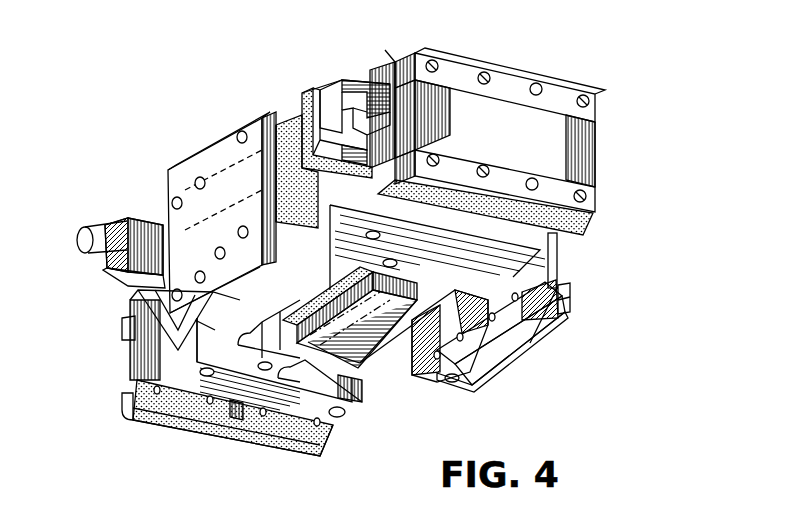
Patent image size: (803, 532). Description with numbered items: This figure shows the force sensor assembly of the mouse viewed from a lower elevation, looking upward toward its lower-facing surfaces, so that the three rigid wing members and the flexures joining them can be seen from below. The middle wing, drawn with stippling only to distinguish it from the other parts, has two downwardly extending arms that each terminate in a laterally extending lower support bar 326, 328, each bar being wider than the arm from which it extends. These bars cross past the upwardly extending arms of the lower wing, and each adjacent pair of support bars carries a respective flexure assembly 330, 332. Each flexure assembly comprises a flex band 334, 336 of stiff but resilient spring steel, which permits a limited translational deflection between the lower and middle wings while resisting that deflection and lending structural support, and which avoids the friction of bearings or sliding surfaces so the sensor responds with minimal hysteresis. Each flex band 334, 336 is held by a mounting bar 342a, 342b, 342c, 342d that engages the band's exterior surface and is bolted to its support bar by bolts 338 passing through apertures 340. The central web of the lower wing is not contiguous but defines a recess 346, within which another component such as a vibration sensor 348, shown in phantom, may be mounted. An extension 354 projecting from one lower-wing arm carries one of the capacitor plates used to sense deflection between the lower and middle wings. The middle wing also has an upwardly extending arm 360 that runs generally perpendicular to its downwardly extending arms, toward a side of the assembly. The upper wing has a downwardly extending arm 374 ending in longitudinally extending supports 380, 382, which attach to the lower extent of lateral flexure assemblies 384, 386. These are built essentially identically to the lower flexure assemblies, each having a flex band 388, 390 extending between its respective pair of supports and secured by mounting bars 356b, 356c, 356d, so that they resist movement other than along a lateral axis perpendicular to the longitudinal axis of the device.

The lower support bar 326 is at (593, 212).
The lower support bar 328 is at (320, 447).
The flexure assembly 330 is at (437, 106).
The flexure assembly 332 is at (127, 362).
The flex band 334 is at (583, 153).
The flex band 336 is at (130, 378).
The bolt 338 is at (487, 70).
The aperture 340 is at (176, 193).
The mounting bar 342a is at (596, 102).
The mounting bar 342b is at (596, 202).
The mounting bar 342c is at (125, 322).
The mounting bar 342d is at (123, 408).
The recess 346 is at (363, 360).
The vibration sensor 348 is at (420, 357).
The extension 354 is at (366, 90).
The mounting bar 356b is at (570, 296).
The mounting bar 356c is at (175, 195).
The mounting bar 356d is at (167, 295).
The upwardly extending arm 360 is at (290, 123).
The downwardly extending arm 374 is at (482, 388).
The longitudinally extending support 380 is at (200, 320).
The longitudinally extending support 382 is at (503, 345).
The lateral flexure assembly 384 is at (180, 252).
The lateral flexure assembly 386 is at (562, 268).
The flex band 388 is at (188, 238).
The flex band 390 is at (557, 258).